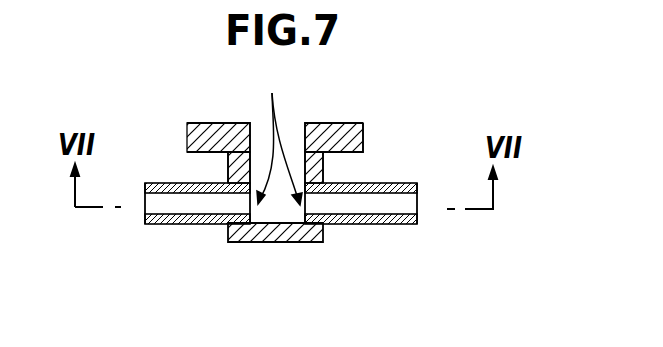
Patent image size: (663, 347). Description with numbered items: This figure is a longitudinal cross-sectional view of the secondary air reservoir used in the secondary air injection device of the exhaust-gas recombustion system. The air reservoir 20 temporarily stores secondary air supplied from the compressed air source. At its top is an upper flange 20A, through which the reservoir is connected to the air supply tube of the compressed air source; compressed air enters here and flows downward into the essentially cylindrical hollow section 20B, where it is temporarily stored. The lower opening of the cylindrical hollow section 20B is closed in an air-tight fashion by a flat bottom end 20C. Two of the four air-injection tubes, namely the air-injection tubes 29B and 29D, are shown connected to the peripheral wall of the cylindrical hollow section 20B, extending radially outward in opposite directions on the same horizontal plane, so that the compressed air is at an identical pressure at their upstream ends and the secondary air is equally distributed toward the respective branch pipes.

The air reservoir 20 is at (329, 189).
The upper flange 20A is at (365, 133).
The cylindrical hollow section 20B is at (325, 175).
The flat bottom end 20C is at (311, 243).
The air-injection tube 29B is at (182, 226).
The air-injection tube 29D is at (398, 227).